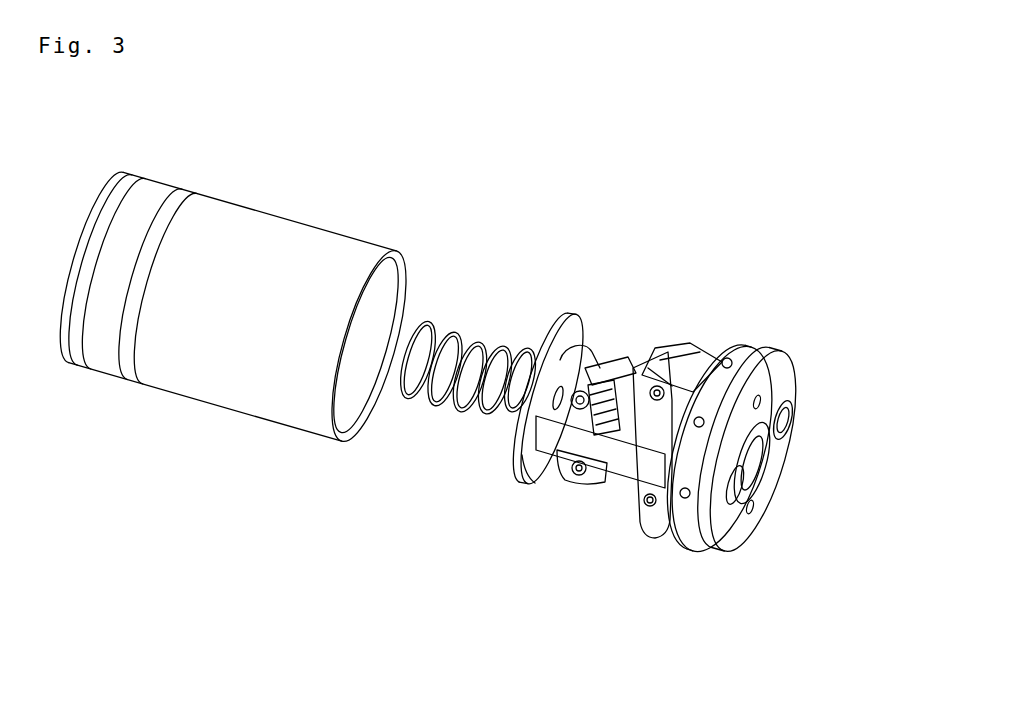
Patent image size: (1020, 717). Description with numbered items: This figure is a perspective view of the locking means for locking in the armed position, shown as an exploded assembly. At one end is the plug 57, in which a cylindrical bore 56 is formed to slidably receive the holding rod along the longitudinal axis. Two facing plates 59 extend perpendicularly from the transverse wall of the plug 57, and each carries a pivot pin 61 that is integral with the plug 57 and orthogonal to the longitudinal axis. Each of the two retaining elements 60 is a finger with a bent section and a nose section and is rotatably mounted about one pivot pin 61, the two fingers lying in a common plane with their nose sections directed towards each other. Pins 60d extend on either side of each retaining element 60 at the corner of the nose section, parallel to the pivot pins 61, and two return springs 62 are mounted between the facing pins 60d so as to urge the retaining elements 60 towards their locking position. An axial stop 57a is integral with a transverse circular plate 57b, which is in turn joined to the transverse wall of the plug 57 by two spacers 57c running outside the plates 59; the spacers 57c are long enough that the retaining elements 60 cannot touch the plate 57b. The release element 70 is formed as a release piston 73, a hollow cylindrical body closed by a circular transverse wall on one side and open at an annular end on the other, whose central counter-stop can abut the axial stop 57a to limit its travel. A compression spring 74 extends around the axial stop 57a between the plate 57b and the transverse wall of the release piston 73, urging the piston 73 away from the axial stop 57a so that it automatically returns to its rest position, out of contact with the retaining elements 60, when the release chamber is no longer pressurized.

The cylindrical bore 56 is at (760, 452).
The plug 57 is at (786, 364).
The axial stop 57a is at (508, 340).
The transverse circular plate 57b is at (530, 467).
The spacer 57c is at (637, 451).
The facing plate 59 is at (660, 425).
The retaining element 60 is at (622, 364).
The pin 60d is at (583, 392).
The pivot pin 61 is at (700, 367).
The return spring 62 is at (567, 430).
The release element 70 is at (217, 410).
The release piston 73 is at (277, 243).
The compression spring 74 is at (445, 335).